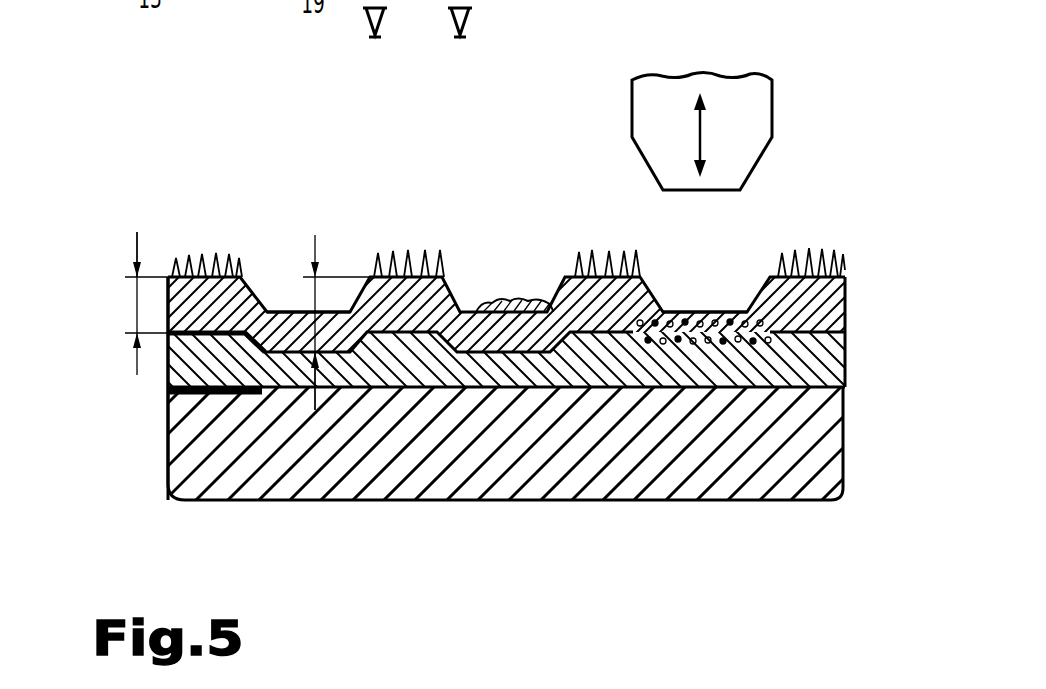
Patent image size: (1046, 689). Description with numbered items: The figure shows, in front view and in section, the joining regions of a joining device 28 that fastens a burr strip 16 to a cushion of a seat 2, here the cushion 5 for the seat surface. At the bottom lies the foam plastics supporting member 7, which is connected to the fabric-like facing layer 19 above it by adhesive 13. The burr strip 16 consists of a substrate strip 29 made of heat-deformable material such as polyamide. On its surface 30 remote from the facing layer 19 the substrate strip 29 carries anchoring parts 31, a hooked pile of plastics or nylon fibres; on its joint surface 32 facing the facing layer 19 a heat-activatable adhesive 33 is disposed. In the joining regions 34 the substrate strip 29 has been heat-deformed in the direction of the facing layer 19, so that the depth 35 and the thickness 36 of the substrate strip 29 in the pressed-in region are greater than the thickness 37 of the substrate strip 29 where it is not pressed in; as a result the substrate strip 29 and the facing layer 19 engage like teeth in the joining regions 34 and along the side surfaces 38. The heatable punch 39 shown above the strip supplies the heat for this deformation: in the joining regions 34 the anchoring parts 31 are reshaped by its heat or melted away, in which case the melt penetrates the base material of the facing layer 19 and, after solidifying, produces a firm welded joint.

The seat 2 is at (136, 196).
The cushion for a seat surface 5 is at (816, 192).
The foam plastics supporting member 7 is at (830, 453).
The adhesive 13 is at (166, 389).
The burr strip 16 is at (590, 246).
The facing layer 19 is at (825, 365).
The joining device 28 is at (860, 228).
The substrate strip 29 is at (833, 305).
The surface 30 is at (196, 272).
The anchoring parts 31 is at (403, 248).
The joint surface 32 is at (150, 322).
The adhesive 33 is at (160, 330).
The joining regions 34 is at (284, 264).
The depth 35 is at (318, 236).
The thickness 36 is at (318, 412).
The thickness 37 is at (141, 236).
The side surfaces 38 is at (462, 304).
The heatable punch 39 is at (660, 97).